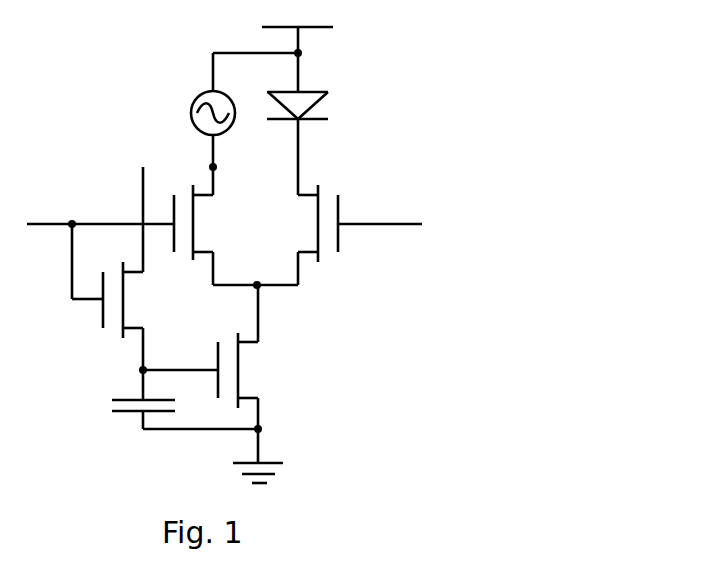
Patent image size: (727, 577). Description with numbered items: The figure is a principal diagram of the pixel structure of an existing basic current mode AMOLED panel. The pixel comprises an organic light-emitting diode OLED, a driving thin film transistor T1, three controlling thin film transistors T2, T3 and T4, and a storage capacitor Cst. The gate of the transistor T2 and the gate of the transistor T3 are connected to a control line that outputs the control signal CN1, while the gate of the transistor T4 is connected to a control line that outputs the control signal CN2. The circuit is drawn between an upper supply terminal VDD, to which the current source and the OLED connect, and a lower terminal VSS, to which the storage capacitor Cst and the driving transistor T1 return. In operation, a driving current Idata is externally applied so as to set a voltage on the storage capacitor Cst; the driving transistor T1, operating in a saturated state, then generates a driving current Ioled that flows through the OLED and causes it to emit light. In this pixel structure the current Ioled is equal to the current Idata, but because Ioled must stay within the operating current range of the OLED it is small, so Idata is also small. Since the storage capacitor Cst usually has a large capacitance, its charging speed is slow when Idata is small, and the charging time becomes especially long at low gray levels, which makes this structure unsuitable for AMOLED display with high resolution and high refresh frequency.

The high-level power supply voltage terminal VDD is at (297, 29).
The low-level power supply voltage terminal (ground) VSS is at (283, 459).
The driving current Idata is at (173, 82).
The driving current Ioled is at (348, 97).
The Organic Light-Emitting Diode OLED is at (322, 124).
The driving Thin Film Transistor T1 is at (215, 357).
The controlling Thin Film Transistor T2 is at (104, 283).
The controlling Thin Film Transistor T3 is at (214, 230).
The controlling Thin Film Transistor T4 is at (304, 239).
The storage capacitor Cst is at (165, 414).
The control signal CN1 is at (100, 248).
The control signal CN2 is at (380, 211).